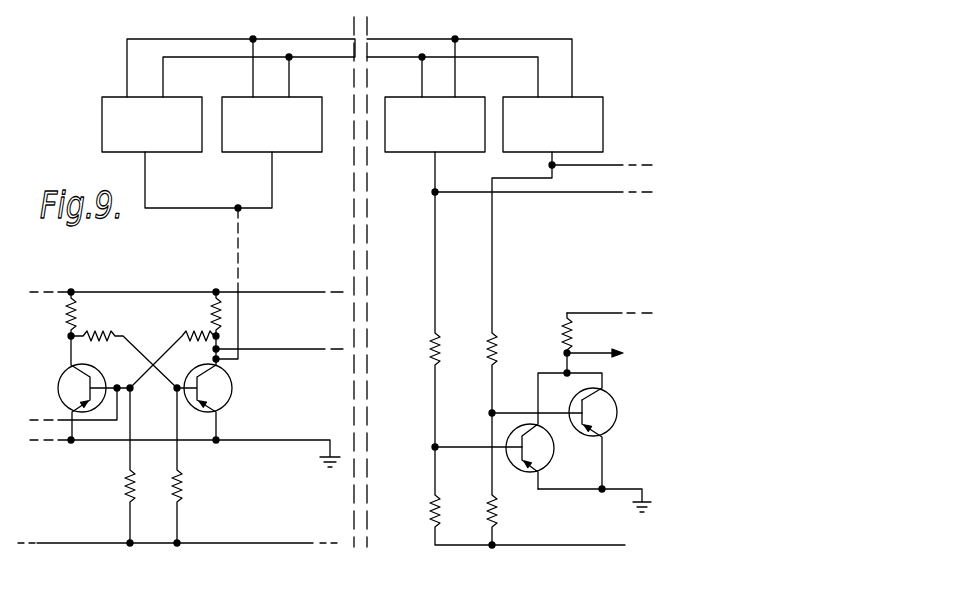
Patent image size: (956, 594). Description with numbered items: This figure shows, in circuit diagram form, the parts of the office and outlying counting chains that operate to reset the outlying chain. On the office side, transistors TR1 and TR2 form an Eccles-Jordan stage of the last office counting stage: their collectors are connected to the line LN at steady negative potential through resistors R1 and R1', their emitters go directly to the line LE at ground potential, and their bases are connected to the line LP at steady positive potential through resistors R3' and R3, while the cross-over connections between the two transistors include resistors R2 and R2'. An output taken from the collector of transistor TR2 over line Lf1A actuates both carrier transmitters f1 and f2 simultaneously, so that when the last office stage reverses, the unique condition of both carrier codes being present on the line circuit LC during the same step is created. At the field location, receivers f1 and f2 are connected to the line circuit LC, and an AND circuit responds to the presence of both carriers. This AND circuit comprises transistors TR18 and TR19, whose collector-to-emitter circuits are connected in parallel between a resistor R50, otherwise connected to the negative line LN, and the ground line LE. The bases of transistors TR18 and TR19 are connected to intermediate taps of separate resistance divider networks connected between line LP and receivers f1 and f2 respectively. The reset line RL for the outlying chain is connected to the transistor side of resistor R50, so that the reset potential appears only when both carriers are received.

The line circuit LC is at (349, 55).
The carrier transmitter f1 and receiver f1 is at (293, 124).
The carrier transmitter f2 and receiver f2 is at (412, 124).
The line LN is at (341, 289).
The line LE is at (340, 477).
The line LP is at (280, 559).
The line Lf1A is at (238, 335).
The resistor R1 is at (57, 314).
The resistor R1' is at (245, 325).
The resistor R2 is at (124, 349).
The resistor R2' is at (173, 349).
The resistor R3 is at (189, 467).
The resistor R3' is at (114, 467).
The resistor R50 is at (587, 344).
The reset line RL is at (604, 359).
The transistor TR1 is at (80, 388).
The transistor TR2 is at (224, 389).
The transistor TR18 is at (554, 431).
The transistor TR19 is at (619, 438).